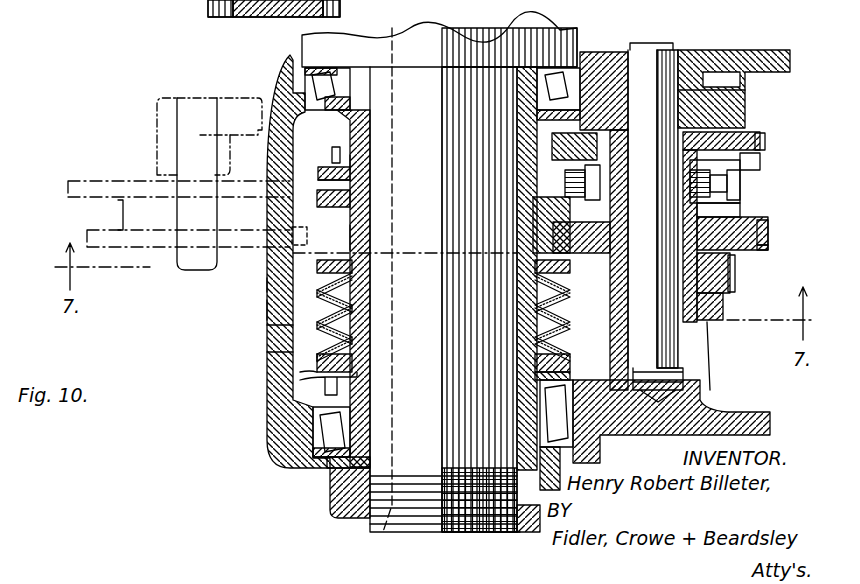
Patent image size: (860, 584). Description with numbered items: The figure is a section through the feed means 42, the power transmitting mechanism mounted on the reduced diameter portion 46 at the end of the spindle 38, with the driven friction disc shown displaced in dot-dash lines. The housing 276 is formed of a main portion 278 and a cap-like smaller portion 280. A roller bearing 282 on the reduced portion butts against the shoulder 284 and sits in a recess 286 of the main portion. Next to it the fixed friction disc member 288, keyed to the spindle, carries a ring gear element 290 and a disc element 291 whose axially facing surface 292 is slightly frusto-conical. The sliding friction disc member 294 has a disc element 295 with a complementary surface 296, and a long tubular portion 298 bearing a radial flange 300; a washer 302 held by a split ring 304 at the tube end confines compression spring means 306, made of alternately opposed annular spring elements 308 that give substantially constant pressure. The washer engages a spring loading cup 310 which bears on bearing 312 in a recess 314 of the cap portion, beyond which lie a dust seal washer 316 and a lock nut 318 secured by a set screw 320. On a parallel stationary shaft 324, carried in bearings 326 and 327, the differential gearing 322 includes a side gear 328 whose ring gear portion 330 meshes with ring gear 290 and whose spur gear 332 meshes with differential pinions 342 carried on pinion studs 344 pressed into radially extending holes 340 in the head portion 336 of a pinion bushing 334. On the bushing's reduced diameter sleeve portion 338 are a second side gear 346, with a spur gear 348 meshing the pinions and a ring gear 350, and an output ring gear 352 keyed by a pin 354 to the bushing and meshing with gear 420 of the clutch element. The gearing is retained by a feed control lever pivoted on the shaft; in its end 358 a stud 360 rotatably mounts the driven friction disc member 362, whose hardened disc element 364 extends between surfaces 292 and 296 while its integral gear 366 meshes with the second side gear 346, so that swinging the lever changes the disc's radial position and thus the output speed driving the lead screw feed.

The spindle 38 is at (580, 47).
The feed means 42 is at (783, 41).
The reduced diameter portion 46 is at (465, 80).
The housing 276 is at (258, 307).
The main portion 278 is at (267, 285).
The cap-like smaller portion 280 is at (270, 330).
The bearing 282 is at (360, 90).
The shoulder 284 is at (430, 57).
The recess 286 is at (277, 87).
The fixed friction disc member 288 is at (375, 141).
The ring gear element 290 is at (332, 155).
The disc element 291 is at (360, 163).
The axially facing surface 292 is at (340, 178).
The sliding friction disc member 294 is at (378, 241).
The disc element 295 is at (350, 200).
The surface 296 is at (350, 187).
The tubular portion 298 is at (367, 292).
The radial flange 300 is at (332, 253).
The washer 302 is at (300, 380).
The split ring 304 is at (353, 372).
The compression spring means 306 is at (367, 305).
The spring elements 308 is at (270, 362).
The spring loading cup 310 is at (560, 377).
The bearing 312 is at (300, 440).
The recess 314 is at (293, 415).
The dust seal washer 316 is at (327, 475).
The lock nut 318 is at (333, 507).
The set screw 320 is at (530, 512).
The differential gearing 322 is at (768, 224).
The shaft 324 is at (643, 60).
The bearing 326 is at (673, 47).
The bearing 327 is at (698, 345).
The side gear 328 is at (747, 132).
The ring gear portion 330 is at (752, 135).
The spur gear 332 is at (743, 152).
The pinion bushing 334 is at (723, 305).
The head portion 336 is at (735, 185).
The reduced diameter sleeve portion 338 is at (730, 280).
The radially extending holes 340 is at (735, 172).
The differential pinions 342 is at (748, 188).
The pinion studs 344 is at (571, 193).
The second side gear 346 is at (770, 237).
The spur gear 348 is at (735, 207).
The ring gear 350 is at (767, 247).
The ring gear 352 is at (735, 263).
The pin 354 is at (570, 316).
The end 358 is at (160, 117).
The stud 360 is at (175, 258).
The driven friction disc member 362 is at (99, 213).
The disc element 364 is at (100, 175).
The gear 366 is at (90, 240).
The gear 420 is at (309, 8).